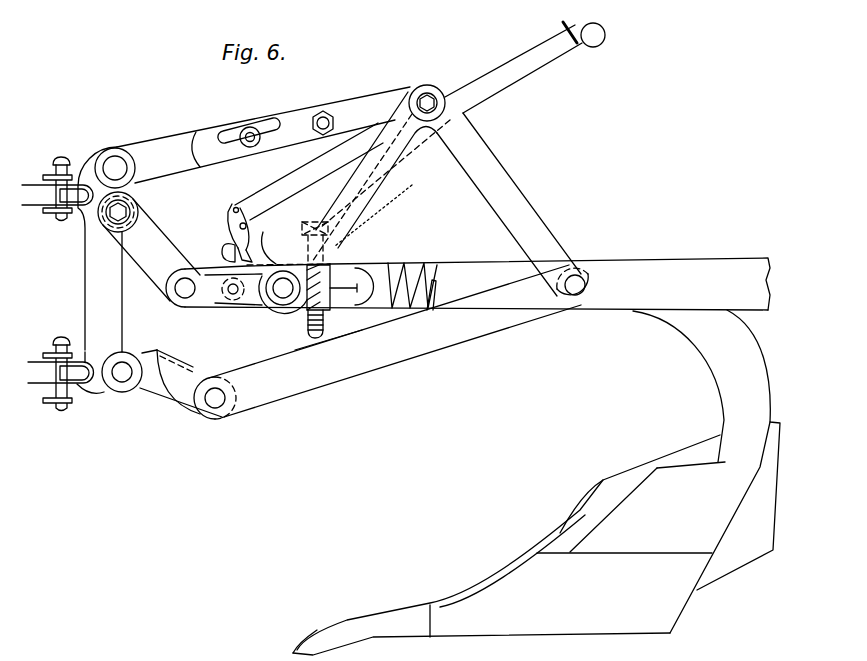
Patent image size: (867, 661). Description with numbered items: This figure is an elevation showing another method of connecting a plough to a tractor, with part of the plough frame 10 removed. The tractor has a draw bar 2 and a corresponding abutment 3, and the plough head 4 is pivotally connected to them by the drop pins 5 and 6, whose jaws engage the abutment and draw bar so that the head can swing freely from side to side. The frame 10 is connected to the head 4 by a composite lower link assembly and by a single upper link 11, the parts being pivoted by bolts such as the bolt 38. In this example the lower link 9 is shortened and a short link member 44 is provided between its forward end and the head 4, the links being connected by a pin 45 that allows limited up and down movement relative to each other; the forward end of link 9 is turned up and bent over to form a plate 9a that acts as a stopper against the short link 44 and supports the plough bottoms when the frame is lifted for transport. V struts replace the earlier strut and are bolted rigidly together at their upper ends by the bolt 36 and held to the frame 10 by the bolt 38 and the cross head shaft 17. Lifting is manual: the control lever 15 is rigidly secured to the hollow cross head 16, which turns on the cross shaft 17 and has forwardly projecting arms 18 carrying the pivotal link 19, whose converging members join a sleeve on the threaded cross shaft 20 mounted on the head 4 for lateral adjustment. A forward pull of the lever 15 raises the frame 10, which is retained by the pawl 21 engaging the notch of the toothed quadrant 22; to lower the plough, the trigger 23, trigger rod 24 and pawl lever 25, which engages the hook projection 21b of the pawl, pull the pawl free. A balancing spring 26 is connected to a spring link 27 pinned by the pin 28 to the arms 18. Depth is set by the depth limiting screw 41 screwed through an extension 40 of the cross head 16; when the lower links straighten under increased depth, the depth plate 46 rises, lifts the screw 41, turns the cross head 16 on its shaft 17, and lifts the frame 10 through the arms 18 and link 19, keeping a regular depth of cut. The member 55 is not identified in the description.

The draw bar 2 is at (40, 380).
The abutment 3 is at (33, 187).
The plough head 4 is at (100, 257).
The drop pin 5 is at (65, 158).
The drop pin 6 is at (63, 336).
The lower link 9 is at (496, 320).
The plate 9a is at (180, 353).
The plough frame 10 is at (484, 276).
The single link 11 is at (219, 125).
The control lever 15 is at (583, 47).
The cross head 16 is at (212, 300).
The cross shaft 17 is at (372, 236).
The forwardly projecting arms 18 is at (178, 298).
The pivotal link 19 is at (176, 263).
The cross shaft 20 is at (140, 208).
The pawl 21 is at (224, 258).
The hook projection 21b is at (235, 210).
The toothed sector or quadrant 22 is at (267, 265).
The trigger 23 is at (574, 25).
The trigger rod 24 is at (495, 70).
The pawl lever 25 is at (242, 207).
The spring 26 is at (433, 282).
The spring link 27 is at (288, 318).
The pin 28 is at (242, 306).
The bolt 36 is at (440, 72).
The bolt 38 is at (578, 284).
The extension 40 is at (347, 268).
The depth limiting screw 41 is at (376, 170).
The short link member 44 is at (147, 393).
The pin 45 is at (217, 408).
The depth plate 46 is at (356, 332).
The brace link 55 is at (480, 160).